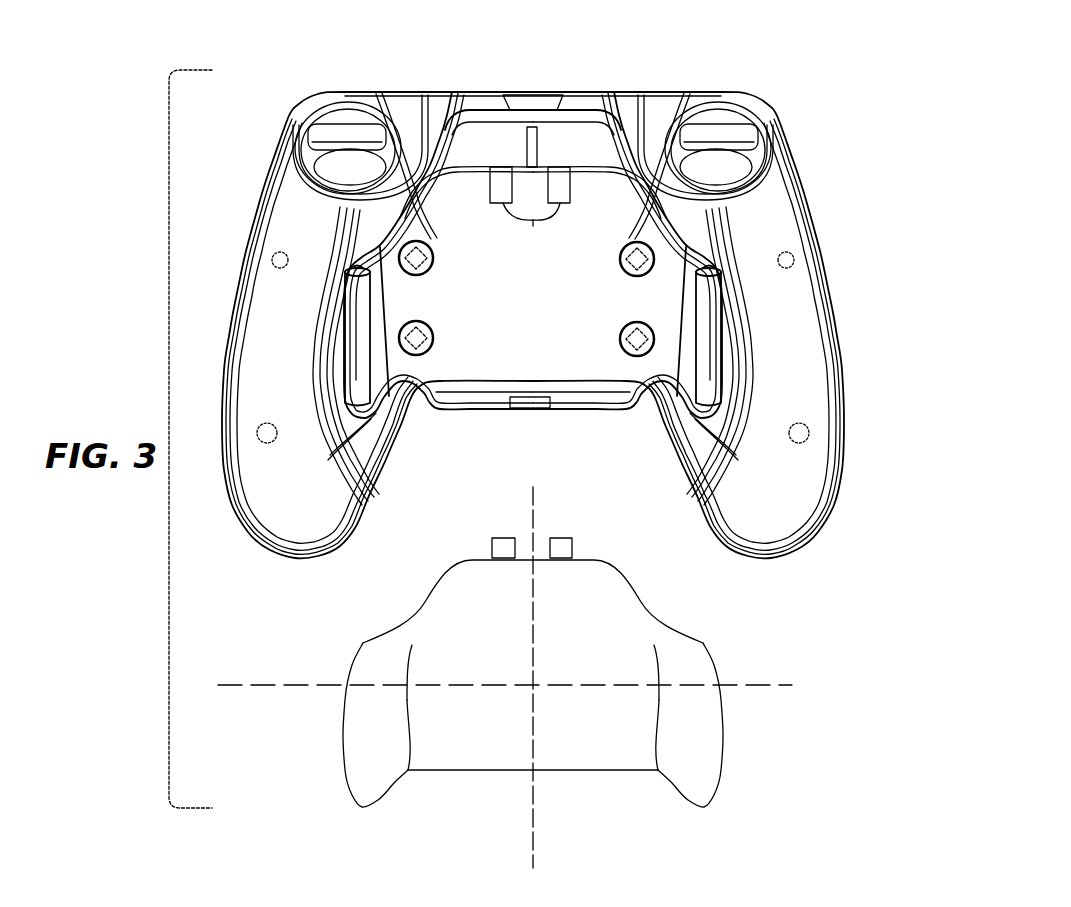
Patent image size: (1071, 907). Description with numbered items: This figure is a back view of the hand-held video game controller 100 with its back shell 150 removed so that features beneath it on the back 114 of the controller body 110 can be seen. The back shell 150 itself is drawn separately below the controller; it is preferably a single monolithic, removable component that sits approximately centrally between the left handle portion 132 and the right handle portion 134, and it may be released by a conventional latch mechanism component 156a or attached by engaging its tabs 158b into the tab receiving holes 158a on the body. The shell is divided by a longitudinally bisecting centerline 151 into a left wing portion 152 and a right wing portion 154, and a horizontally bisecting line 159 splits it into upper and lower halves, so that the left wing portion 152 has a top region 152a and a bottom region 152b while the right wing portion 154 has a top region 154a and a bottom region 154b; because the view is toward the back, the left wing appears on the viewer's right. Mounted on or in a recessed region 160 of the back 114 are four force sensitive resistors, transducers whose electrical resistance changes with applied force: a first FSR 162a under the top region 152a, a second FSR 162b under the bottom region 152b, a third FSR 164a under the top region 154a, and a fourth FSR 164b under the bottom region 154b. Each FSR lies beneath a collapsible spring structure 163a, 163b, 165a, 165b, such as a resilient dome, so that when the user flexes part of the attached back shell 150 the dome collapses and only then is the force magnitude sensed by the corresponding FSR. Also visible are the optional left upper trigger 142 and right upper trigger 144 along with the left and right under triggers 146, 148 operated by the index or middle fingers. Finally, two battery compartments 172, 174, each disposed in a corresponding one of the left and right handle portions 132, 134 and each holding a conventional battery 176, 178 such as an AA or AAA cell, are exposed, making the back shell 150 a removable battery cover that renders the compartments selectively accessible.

The hand-held video game controller 100 is at (822, 44).
The controller body 110 is at (590, 105).
The back 114 is at (467, 107).
The left handle portion 132 is at (790, 490).
The right handle portion 134 is at (268, 497).
The left upper trigger 142 is at (727, 110).
The right upper trigger 144 is at (338, 113).
The left under trigger 146 is at (727, 163).
The right under trigger 148 is at (340, 164).
The back shell 150 is at (527, 752).
The longitudinally bisecting centerline 151 is at (537, 841).
The left wing portion 152 is at (687, 697).
The top region of left wing portion 152a is at (678, 653).
The bottom region of left wing portion 152b is at (685, 750).
The right wing portion 154 is at (380, 697).
The top region of right wing portion 154a is at (387, 653).
The bottom region of right wing portion 154b is at (380, 750).
The latch mechanism component 156a is at (534, 405).
The tab receiving holes 158a is at (530, 208).
The tabs 158b is at (560, 538).
The horizontally bisecting line 159 is at (242, 683).
The recessed region 160 is at (462, 203).
The first force sensitive resistor 162a is at (622, 252).
The second force sensitive resistor 162b is at (622, 332).
The collapsible spring structure 163a is at (622, 262).
The collapsible spring structure 163b is at (622, 342).
The third force sensitive resistor 164a is at (430, 262).
The fourth force sensitive resistor 164b is at (430, 342).
The collapsible spring structure 165a is at (433, 250).
The collapsible spring structure 165b is at (433, 330).
The battery compartment 172 is at (689, 392).
The battery compartment 174 is at (377, 392).
The battery 176 is at (713, 342).
The battery 178 is at (355, 342).